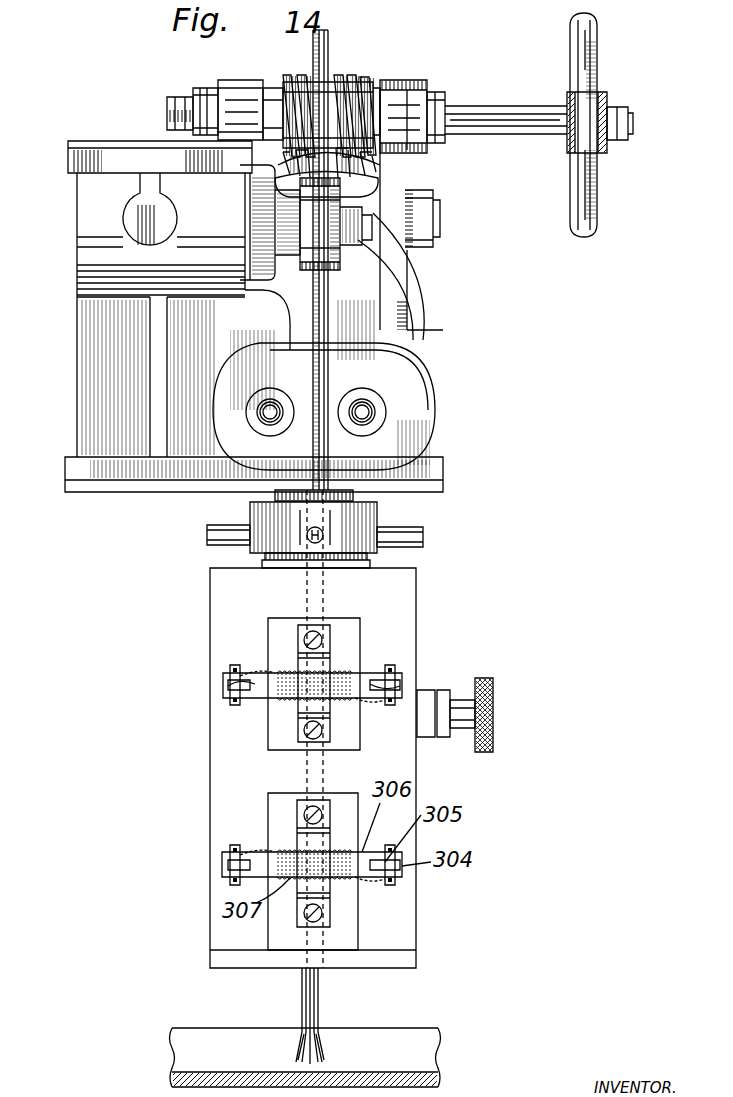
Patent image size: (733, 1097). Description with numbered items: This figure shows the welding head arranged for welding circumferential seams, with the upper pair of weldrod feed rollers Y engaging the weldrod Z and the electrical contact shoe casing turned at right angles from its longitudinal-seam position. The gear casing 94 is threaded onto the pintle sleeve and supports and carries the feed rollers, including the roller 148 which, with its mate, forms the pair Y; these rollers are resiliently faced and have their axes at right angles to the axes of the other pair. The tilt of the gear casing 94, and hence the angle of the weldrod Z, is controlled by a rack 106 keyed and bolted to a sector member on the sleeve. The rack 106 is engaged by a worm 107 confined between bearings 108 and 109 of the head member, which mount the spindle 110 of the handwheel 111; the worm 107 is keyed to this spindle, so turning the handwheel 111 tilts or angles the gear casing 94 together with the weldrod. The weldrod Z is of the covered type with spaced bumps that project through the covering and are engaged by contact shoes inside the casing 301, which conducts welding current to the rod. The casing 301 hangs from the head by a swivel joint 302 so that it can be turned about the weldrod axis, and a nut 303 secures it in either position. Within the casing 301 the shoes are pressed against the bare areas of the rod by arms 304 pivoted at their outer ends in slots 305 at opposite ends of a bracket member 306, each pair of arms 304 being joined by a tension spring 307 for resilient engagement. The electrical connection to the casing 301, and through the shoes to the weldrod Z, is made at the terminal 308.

The gear casing 94 is at (88, 214).
The rack 106 is at (367, 162).
The worm 107 is at (348, 80).
The bearing 108 is at (408, 84).
The bearing 109 is at (238, 82).
The spindle 110 is at (478, 106).
The handwheel 111 is at (592, 68).
The roller 148 is at (333, 273).
The pair of weldrod feed rollers Y is at (340, 255).
The weldrod Z is at (322, 385).
The casing 301 is at (420, 590).
The swivel joint 302 is at (355, 493).
The nut 303 is at (425, 538).
The arms 304 is at (400, 688).
The slots 305 is at (383, 680).
The bracket member 306 is at (362, 672).
The spring 307 is at (290, 700).
The terminal 308 is at (443, 738).